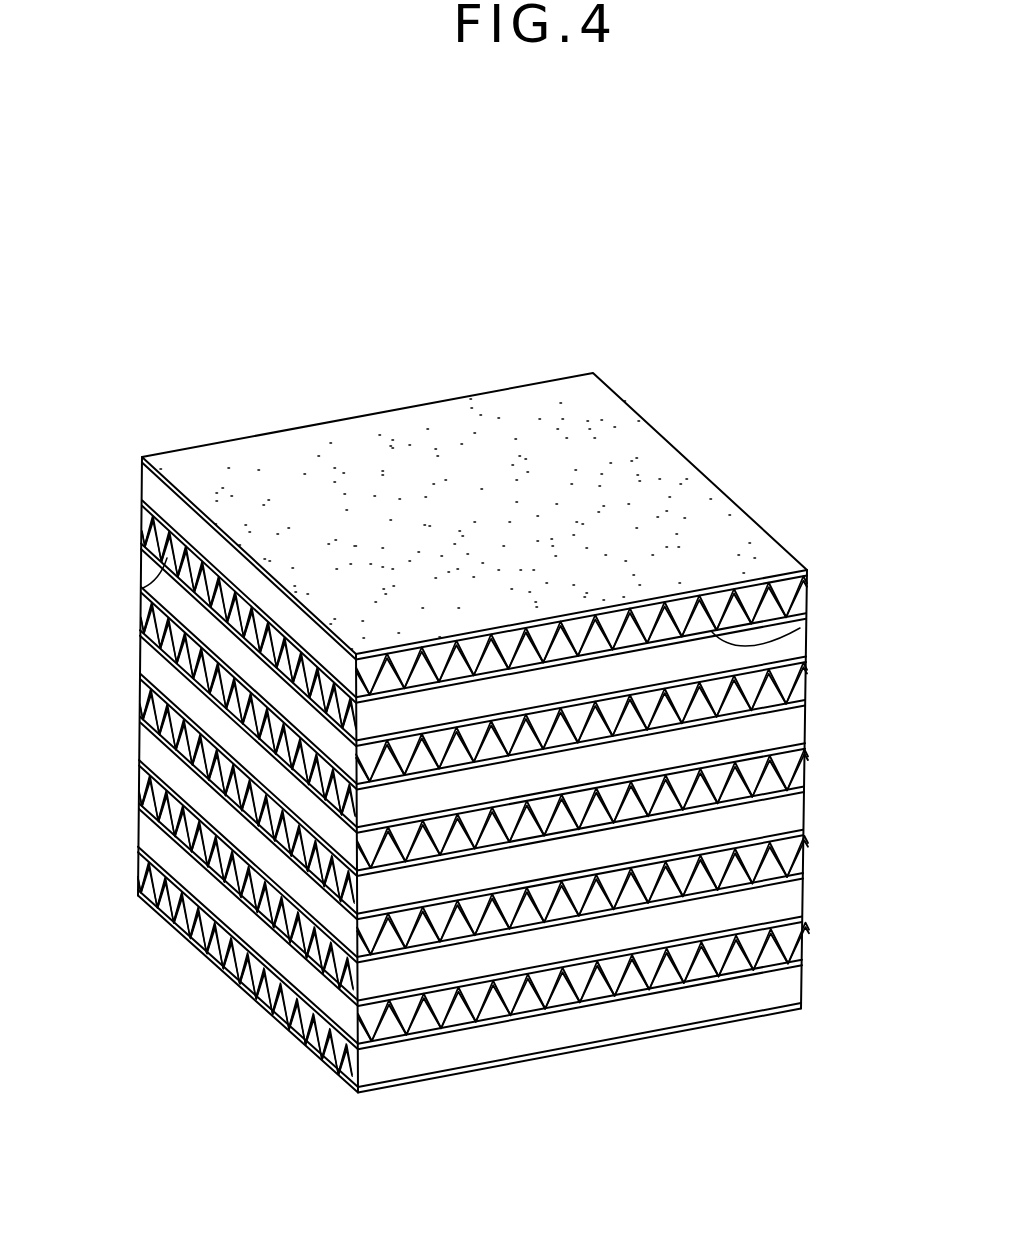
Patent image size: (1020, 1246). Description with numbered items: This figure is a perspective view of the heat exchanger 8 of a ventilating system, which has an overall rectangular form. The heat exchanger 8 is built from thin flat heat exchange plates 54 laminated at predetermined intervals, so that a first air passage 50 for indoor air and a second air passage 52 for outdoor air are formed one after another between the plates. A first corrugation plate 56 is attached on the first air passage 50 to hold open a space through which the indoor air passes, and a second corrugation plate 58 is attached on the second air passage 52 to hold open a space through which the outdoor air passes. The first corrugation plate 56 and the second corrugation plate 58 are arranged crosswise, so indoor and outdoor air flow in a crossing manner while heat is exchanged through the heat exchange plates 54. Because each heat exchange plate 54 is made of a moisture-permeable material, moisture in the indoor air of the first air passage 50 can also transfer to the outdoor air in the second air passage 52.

The heat exchanger 8 is at (571, 335).
The first air passage 50 is at (718, 645).
The second air passage 52 is at (143, 588).
The heat exchange plate 54 is at (688, 486).
The first corrugation plate 56 is at (795, 592).
The second corrugation plate 58 is at (150, 533).